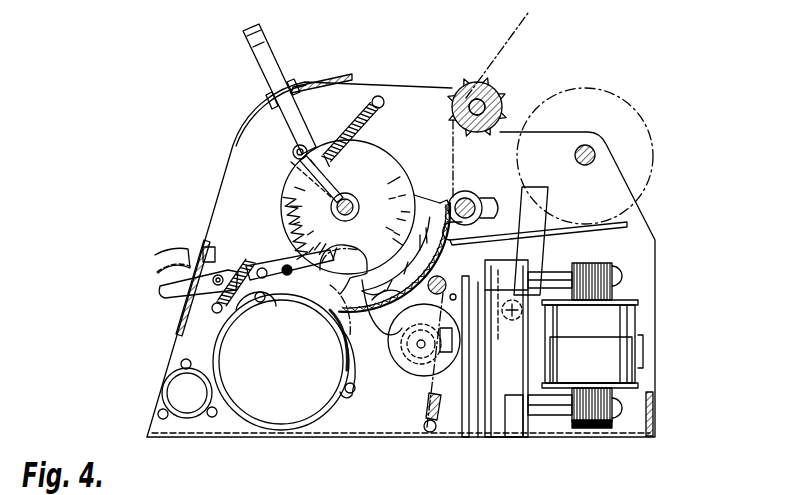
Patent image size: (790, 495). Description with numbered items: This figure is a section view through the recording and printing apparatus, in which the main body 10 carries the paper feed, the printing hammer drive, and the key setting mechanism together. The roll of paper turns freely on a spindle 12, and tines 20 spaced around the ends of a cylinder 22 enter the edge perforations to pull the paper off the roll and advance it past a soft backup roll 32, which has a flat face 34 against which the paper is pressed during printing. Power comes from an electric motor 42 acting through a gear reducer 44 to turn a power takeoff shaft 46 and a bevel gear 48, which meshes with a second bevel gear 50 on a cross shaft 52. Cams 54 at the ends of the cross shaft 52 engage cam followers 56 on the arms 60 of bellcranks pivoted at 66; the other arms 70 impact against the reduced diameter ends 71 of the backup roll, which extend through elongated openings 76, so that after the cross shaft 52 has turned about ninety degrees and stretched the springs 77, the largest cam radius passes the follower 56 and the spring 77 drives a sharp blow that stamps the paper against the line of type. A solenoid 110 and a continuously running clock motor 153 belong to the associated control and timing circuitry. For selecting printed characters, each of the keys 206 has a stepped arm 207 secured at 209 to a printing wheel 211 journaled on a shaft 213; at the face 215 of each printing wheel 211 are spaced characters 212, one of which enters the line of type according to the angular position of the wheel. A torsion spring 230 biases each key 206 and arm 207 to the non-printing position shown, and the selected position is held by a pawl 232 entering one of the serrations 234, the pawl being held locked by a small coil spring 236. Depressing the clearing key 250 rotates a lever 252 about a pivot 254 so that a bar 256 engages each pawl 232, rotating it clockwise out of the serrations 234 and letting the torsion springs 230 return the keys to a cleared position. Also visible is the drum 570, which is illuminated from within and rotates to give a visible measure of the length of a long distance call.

The frame plate 10 is at (645, 118).
The spindle 12 is at (578, 165).
The tines 20 is at (496, 88).
The cylinder 22 is at (490, 105).
The soft backup roll 32 is at (468, 193).
The flat face 34 is at (442, 203).
The electric motor 42 is at (626, 312).
The gear reducer 44 is at (516, 384).
The power takeoff shaft 46 is at (504, 368).
The bevel gear 48 is at (430, 392).
The second bevel gear 50 is at (400, 366).
The cross shaft 52 is at (410, 374).
The cams 54 is at (390, 332).
The cam followers 56 is at (440, 276).
The arms 60 is at (466, 276).
The pivot 66 is at (511, 320).
The other arms 70 is at (538, 241).
The reduced diameter ends 71 is at (482, 204).
The elongated openings 76 is at (534, 230).
The springs 77 is at (438, 420).
The solenoid 110 is at (628, 355).
The clock motor 153 is at (285, 362).
The keys 206 is at (258, 32).
The arm 207 is at (314, 140).
The securing point 209 is at (366, 150).
The printing wheel 211 is at (404, 178).
The spaced characters 212 is at (420, 252).
The shaft 213 is at (362, 207).
The face 215 is at (412, 268).
The torsion spring 230 is at (296, 150).
The pawl 232 is at (300, 250).
The serrations 234 is at (343, 260).
The coil spring 236 is at (236, 262).
The clearing key 250 is at (173, 293).
The lever 252 is at (178, 266).
The pivot 254 is at (216, 275).
The bar 256 is at (286, 265).
The drum 570 is at (163, 387).